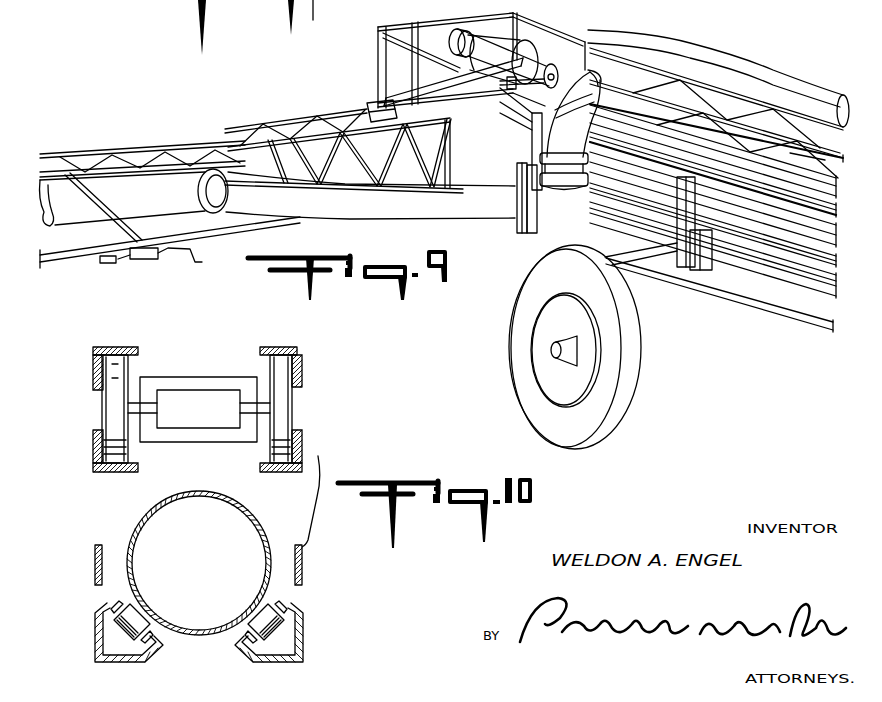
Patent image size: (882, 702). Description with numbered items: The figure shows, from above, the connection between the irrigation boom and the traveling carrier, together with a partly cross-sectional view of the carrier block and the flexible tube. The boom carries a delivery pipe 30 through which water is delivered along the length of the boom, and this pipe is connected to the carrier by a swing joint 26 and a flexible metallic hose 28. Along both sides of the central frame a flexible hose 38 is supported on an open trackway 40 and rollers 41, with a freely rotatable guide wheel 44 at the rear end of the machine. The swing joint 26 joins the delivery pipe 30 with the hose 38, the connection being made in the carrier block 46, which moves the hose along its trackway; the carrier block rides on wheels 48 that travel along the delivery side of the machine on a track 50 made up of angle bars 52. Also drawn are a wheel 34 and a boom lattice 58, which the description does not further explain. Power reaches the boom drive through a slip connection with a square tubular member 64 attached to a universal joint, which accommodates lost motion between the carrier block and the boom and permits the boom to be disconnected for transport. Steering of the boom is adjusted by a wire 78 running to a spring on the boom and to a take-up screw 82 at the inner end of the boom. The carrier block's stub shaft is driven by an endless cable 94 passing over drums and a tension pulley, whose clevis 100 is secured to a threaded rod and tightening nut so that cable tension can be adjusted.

In FIG. 9, the swing joint 26 is at (580, 142).
In FIG. 9, the flexible metallic hose 28 is at (341, 208).
In FIG. 9, the delivery pipe 30 is at (132, 201).
In FIG. 9, the wheel 34 is at (635, 356).
In FIG. 9, the flexible hose 38 is at (800, 87).
In FIG. 10, the flexible hose 38 is at (149, 511).
In FIG. 10, the open trackway 40 is at (94, 632).
In FIG. 10, the rollers 41 is at (260, 631).
In FIG. 9, the guide wheel 44 is at (493, 42).
In FIG. 10, the carrier block 46 is at (175, 375).
In FIG. 10, the wheels 48 is at (112, 421).
In FIG. 10, the track 50 is at (94, 461).
In FIG. 10, the angle bars 52 is at (94, 357).
In FIG. 9, the truss boom 58 is at (313, 123).
In FIG. 9, the square tubular member 64 is at (413, 90).
In FIG. 9, the wire 78 is at (72, 268).
In FIG. 9, the take-up screw 82 is at (128, 262).
In FIG. 9, the cable 94 is at (545, 51).
In FIG. 9, the clevis 100 is at (449, 32).